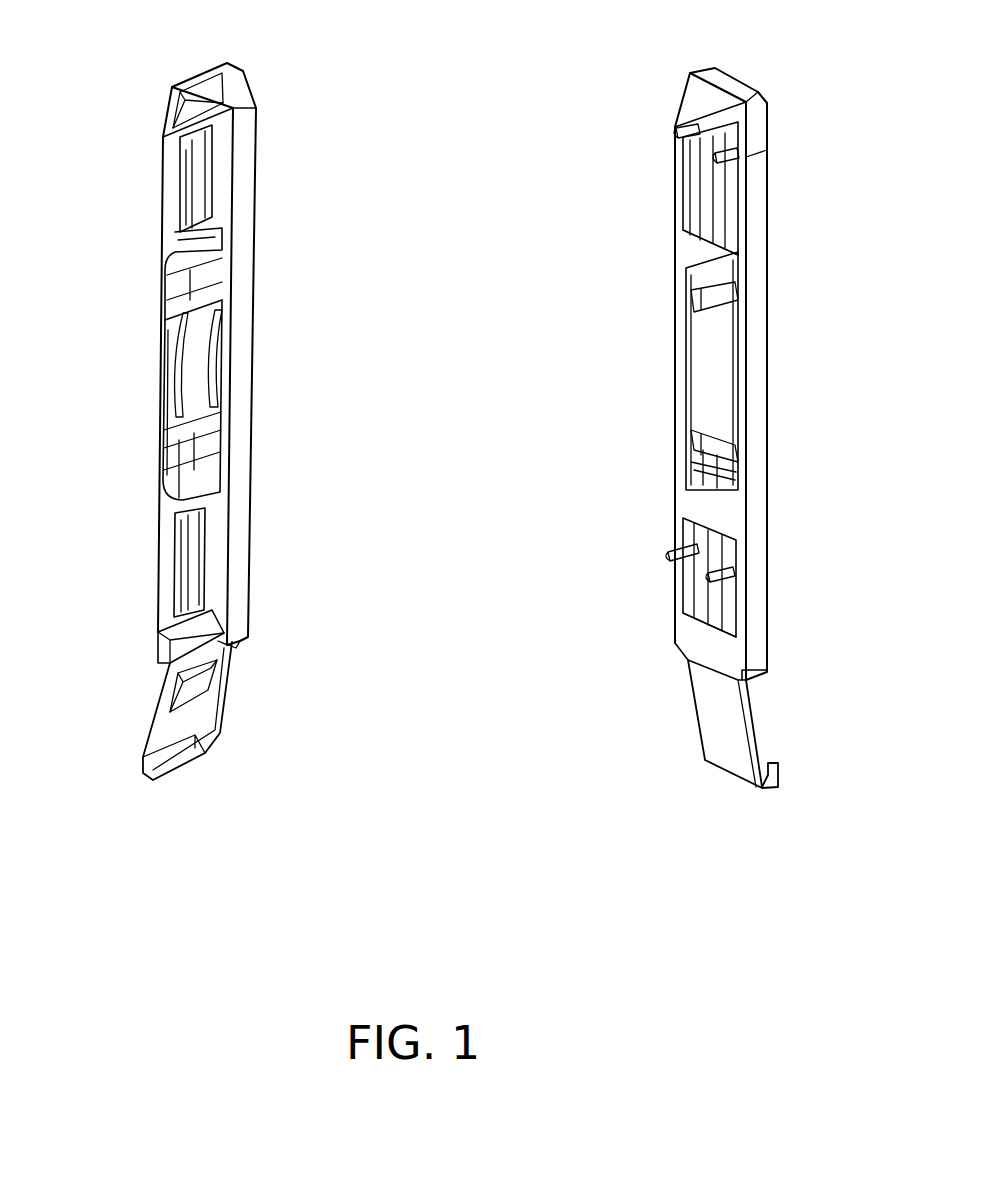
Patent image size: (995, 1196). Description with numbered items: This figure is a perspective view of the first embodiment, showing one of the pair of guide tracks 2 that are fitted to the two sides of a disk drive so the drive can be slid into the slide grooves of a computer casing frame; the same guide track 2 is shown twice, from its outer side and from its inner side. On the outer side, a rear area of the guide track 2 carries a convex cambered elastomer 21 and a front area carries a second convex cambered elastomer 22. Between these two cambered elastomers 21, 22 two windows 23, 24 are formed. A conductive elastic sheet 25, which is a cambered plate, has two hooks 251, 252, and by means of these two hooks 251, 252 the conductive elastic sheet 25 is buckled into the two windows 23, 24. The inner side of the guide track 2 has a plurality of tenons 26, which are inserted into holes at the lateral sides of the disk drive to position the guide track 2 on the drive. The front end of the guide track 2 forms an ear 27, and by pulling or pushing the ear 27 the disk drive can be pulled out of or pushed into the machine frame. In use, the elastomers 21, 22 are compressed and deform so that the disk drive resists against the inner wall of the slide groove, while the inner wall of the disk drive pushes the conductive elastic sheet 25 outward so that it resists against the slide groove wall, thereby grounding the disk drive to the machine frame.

The guide track 2 is at (261, 395).
The convex cambered elastomer 21 is at (187, 182).
The convex cambered elastomer 22 is at (190, 558).
The window 23 is at (205, 290).
The window 24 is at (195, 454).
The conductive elastic sheet 25 is at (193, 363).
The hook 251 is at (688, 310).
The hook 252 is at (700, 452).
The tenon 26 is at (676, 132).
The ear 27 is at (205, 710).